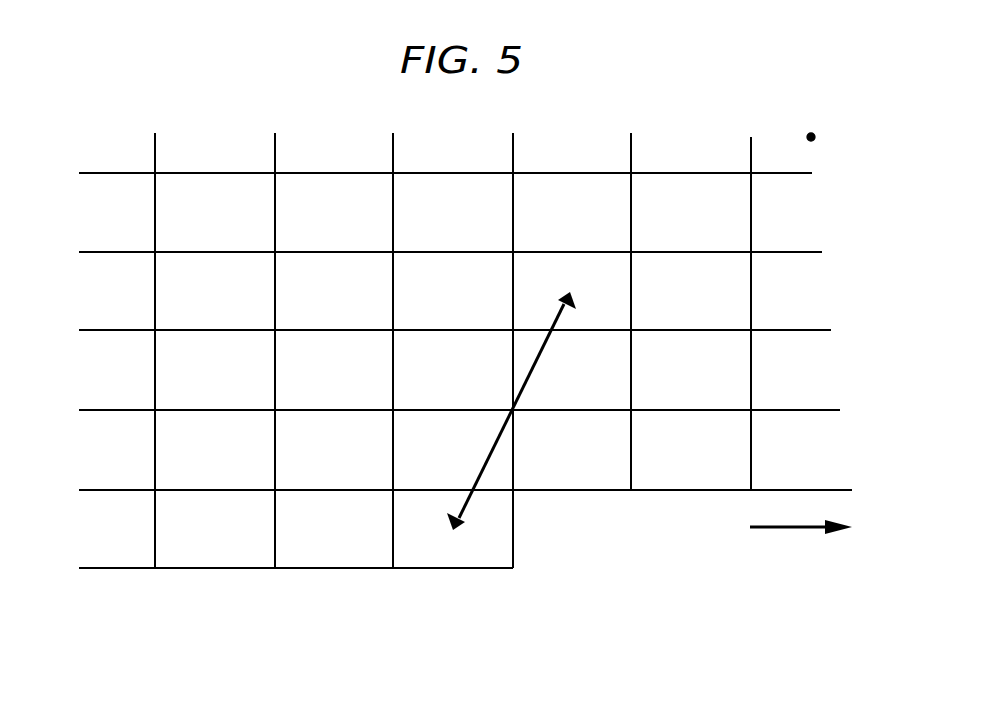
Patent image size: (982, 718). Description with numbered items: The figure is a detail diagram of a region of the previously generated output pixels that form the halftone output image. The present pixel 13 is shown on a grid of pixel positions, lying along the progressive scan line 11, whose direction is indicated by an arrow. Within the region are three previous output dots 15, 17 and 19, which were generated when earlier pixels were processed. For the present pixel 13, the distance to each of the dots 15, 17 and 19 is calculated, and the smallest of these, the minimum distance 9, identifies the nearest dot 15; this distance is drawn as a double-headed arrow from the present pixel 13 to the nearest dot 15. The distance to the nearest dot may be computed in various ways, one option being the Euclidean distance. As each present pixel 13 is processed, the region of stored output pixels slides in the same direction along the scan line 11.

The minimum distance 9 is at (482, 473).
The scan line 11 is at (793, 530).
The present pixel 13 is at (465, 552).
The nearest dot 15 is at (570, 292).
The previous output dot 17 is at (333, 213).
The previous output dot 19 is at (95, 370).